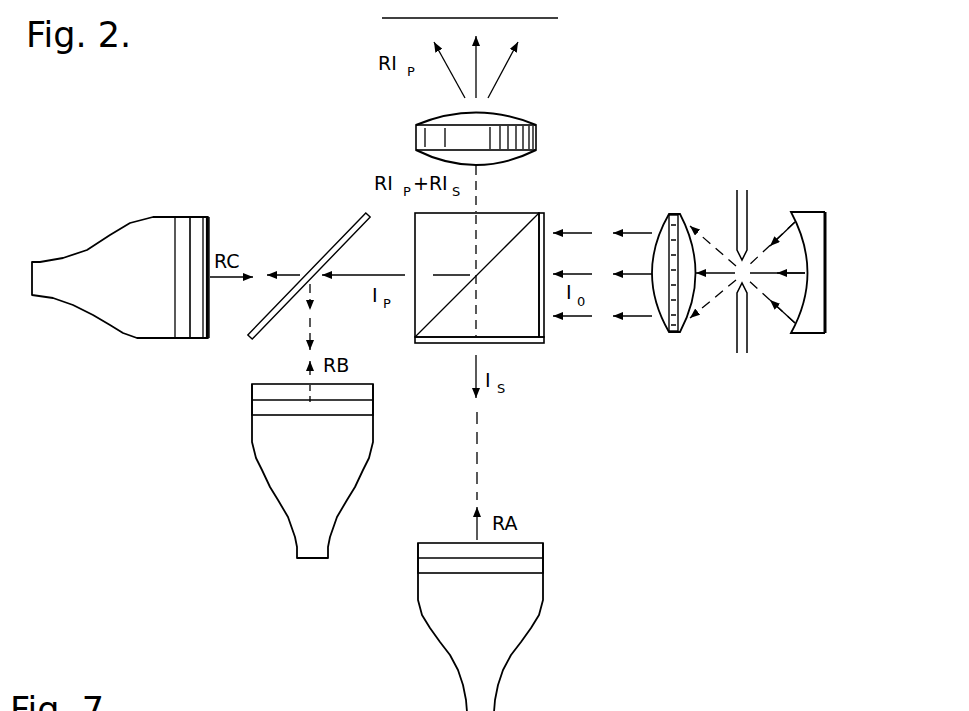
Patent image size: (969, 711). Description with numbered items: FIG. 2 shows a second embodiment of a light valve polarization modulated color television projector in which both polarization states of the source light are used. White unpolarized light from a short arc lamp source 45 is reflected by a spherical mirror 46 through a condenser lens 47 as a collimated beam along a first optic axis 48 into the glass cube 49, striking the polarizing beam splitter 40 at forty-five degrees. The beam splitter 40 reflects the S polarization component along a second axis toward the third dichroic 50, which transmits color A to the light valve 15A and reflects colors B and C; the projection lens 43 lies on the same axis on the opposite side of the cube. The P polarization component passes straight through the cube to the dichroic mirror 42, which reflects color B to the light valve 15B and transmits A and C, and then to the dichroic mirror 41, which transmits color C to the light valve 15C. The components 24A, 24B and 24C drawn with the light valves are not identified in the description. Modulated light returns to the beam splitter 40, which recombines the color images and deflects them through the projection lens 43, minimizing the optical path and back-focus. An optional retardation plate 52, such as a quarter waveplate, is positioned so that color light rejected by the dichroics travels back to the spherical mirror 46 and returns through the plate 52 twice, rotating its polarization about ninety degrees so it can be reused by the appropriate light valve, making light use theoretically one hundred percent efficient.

The projection lens 43 is at (533, 129).
The polarizing beam splitter 40 is at (515, 232).
The glass cube 49 is at (453, 243).
The retardation plate 52 is at (543, 227).
The third dichroic 50 is at (530, 343).
The dichroic mirror 42 is at (343, 238).
The dichroic mirror 41 is at (210, 322).
The light valve 15C is at (206, 219).
The photomultiplier tube 24C is at (127, 323).
The light valve 15B is at (250, 401).
The photomultiplier tube 24B is at (287, 502).
The light valve 15A is at (530, 552).
The photomultiplier tube 24A is at (537, 588).
The condenser lens 47 is at (673, 213).
The first optic axis 48 is at (694, 296).
The short arc lamp source 45 is at (745, 195).
The spherical mirror 46 is at (826, 212).